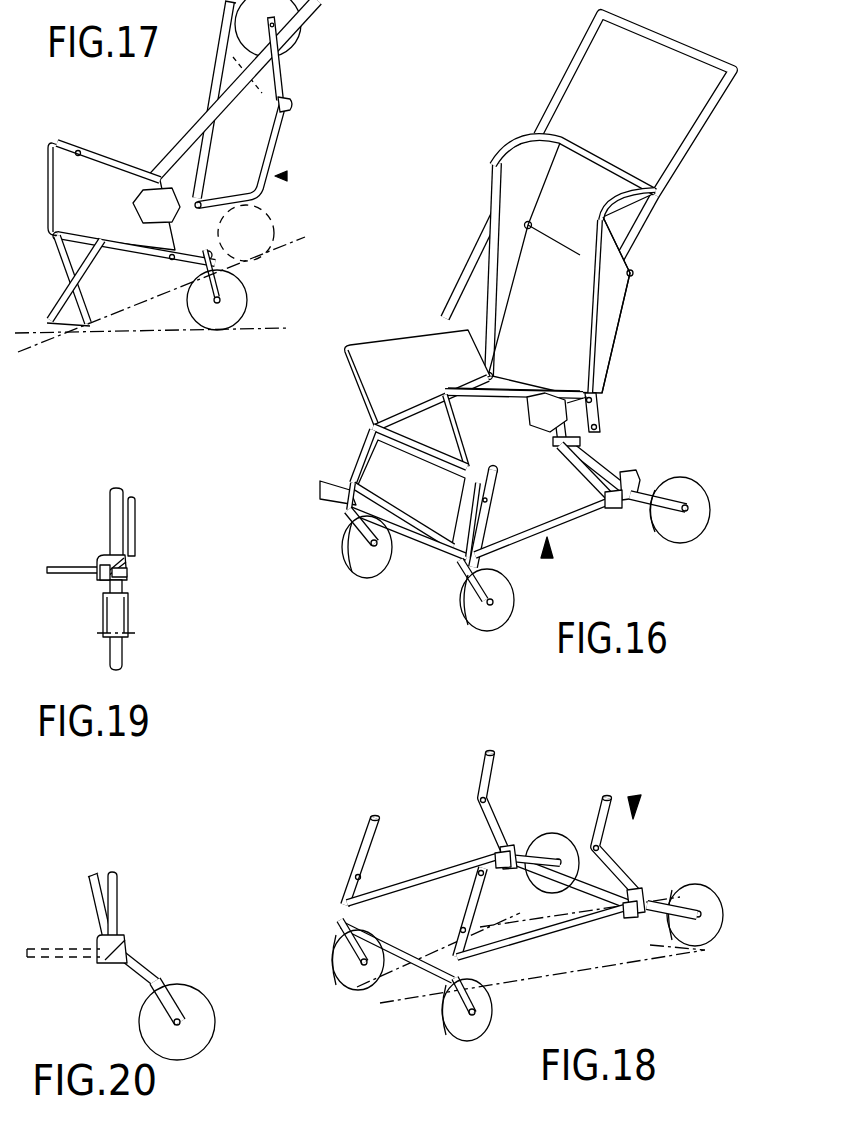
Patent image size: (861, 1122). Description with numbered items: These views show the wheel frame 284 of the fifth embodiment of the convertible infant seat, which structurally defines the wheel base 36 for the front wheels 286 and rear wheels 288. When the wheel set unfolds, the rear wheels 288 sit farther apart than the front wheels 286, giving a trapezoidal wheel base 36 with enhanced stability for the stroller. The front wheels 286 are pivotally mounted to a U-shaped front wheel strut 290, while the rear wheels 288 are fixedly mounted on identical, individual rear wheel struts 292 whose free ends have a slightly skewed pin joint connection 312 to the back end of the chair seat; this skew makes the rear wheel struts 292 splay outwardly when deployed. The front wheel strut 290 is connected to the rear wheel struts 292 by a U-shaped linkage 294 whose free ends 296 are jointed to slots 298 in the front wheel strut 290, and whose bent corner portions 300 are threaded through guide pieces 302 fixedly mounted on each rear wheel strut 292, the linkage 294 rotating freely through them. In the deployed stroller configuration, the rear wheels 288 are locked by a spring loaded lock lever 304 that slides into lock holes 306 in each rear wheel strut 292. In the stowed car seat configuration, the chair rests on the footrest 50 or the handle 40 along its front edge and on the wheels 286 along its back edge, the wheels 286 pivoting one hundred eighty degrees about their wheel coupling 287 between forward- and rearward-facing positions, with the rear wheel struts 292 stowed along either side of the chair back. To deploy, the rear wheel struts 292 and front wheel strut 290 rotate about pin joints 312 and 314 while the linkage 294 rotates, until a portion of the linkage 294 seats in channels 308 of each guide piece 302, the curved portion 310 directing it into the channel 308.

In FIG. 18, the wheel base 36 is at (582, 998).
In FIG. 17, the handle 40 is at (122, 228).
In FIG. 16, the handle 40 is at (468, 467).
In FIG. 17, the footrest 50 is at (70, 333).
In FIG. 17, the wheel frame 284 is at (284, 176).
In FIG. 16, the wheel frame 284 is at (549, 556).
In FIG. 18, the wheel frame 284 is at (636, 797).
In FIG. 17, the front wheels 286 is at (262, 222).
In FIG. 16, the front wheels 286 is at (462, 596).
In FIG. 18, the front wheels 286 is at (440, 1025).
In FIG. 17, the wheel coupling 287 is at (182, 280).
In FIG. 18, the wheel coupling 287 is at (340, 935).
In FIG. 17, the rear wheels 288 is at (301, 40).
In FIG. 16, the rear wheels 288 is at (662, 540).
In FIG. 18, the rear wheels 288 is at (540, 890).
In FIG. 17, the front wheel strut 290 is at (110, 266).
In FIG. 16, the front wheel strut 290 is at (436, 564).
In FIG. 18, the front wheel strut 290 is at (364, 835).
In FIG. 17, the rear wheel struts 292 is at (282, 87).
In FIG. 16, the rear wheel struts 292 is at (600, 458).
In FIG. 19, the rear wheel struts 292 is at (110, 506).
In FIG. 20, the rear wheel struts 292 is at (93, 888).
In FIG. 18, the rear wheel struts 292 is at (492, 783).
In FIG. 17, the linkage 294 is at (248, 157).
In FIG. 16, the linkage 294 is at (583, 485).
In FIG. 19, the linkage 294 is at (135, 508).
In FIG. 20, the linkage 294 is at (118, 885).
In FIG. 18, the linkage 294 is at (586, 902).
In FIG. 17, the free ends 296 is at (173, 263).
In FIG. 16, the free ends 296 is at (478, 550).
In FIG. 18, the free ends 296 is at (348, 900).
In FIG. 16, the slots 298 is at (488, 512).
In FIG. 18, the slots 298 is at (355, 870).
In FIG. 16, the bent corner portions 300 is at (618, 510).
In FIG. 19, the bent corner portions 300 is at (128, 572).
In FIG. 18, the bent corner portions 300 is at (495, 858).
In FIG. 17, the guide pieces 302 is at (292, 104).
In FIG. 16, the guide pieces 302 is at (629, 478).
In FIG. 19, the guide pieces 302 is at (128, 556).
In FIG. 20, the guide pieces 302 is at (120, 938).
In FIG. 18, the guide pieces 302 is at (500, 848).
In FIG. 16, the spring loaded lock lever 304 is at (600, 416).
In FIG. 16, the lock holes 306 is at (582, 443).
In FIG. 18, the lock holes 306 is at (590, 830).
In FIG. 19, the channels 308 is at (100, 580).
In FIG. 19, the curved portion 310 is at (104, 556).
In FIG. 17, the pin joint connection 312 is at (178, 222).
In FIG. 16, the pin joint connection 312 is at (592, 400).
In FIG. 17, the pin joint 314 is at (58, 224).
In FIG. 16, the pin joint 314 is at (489, 470).